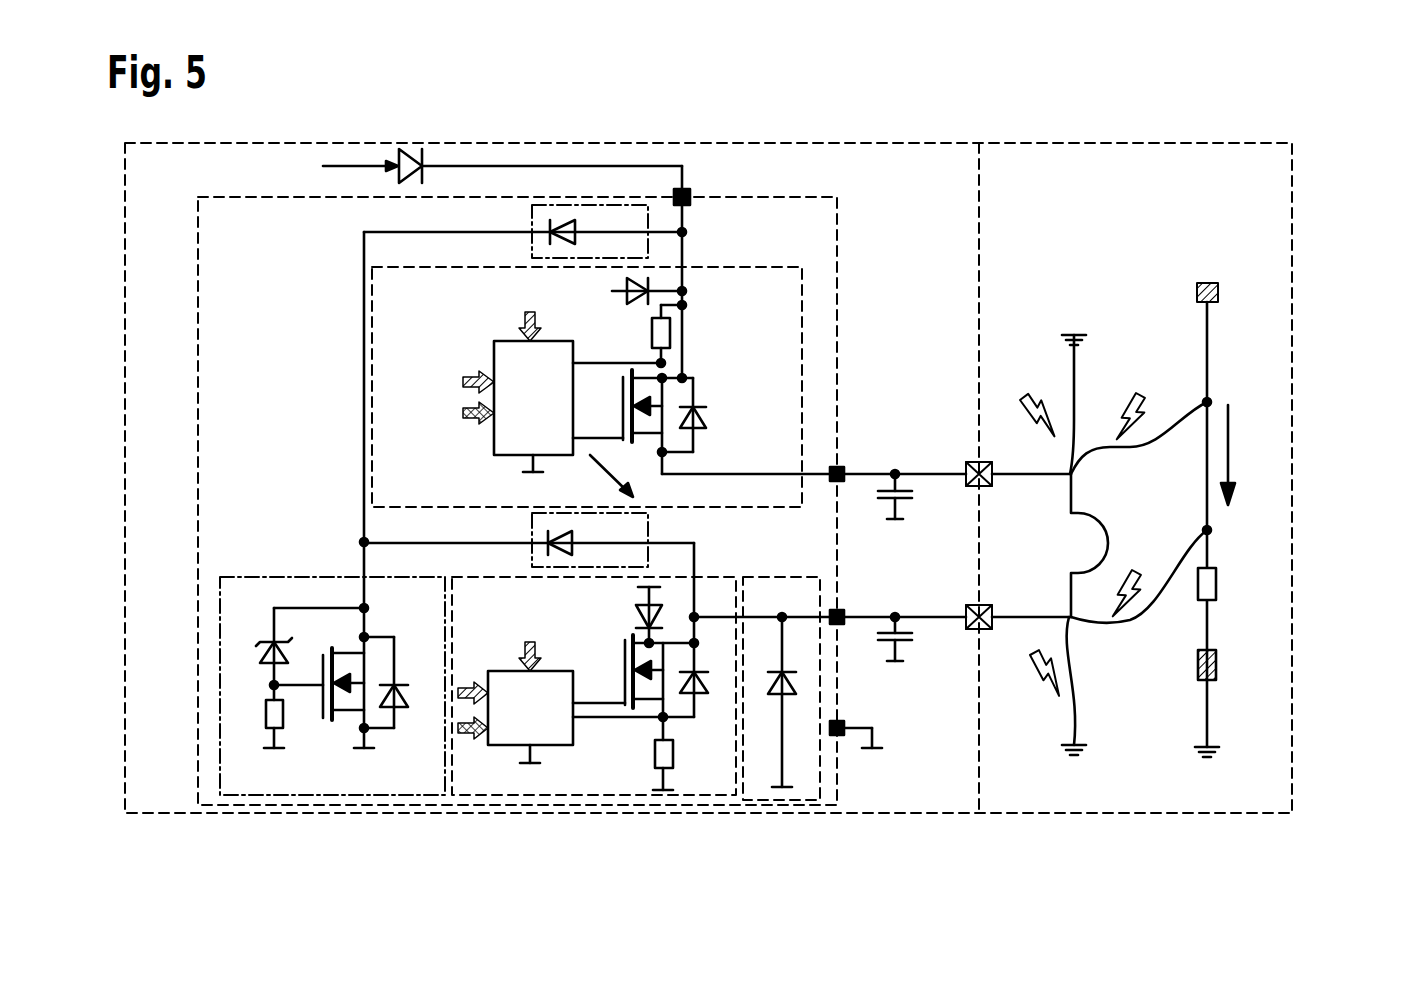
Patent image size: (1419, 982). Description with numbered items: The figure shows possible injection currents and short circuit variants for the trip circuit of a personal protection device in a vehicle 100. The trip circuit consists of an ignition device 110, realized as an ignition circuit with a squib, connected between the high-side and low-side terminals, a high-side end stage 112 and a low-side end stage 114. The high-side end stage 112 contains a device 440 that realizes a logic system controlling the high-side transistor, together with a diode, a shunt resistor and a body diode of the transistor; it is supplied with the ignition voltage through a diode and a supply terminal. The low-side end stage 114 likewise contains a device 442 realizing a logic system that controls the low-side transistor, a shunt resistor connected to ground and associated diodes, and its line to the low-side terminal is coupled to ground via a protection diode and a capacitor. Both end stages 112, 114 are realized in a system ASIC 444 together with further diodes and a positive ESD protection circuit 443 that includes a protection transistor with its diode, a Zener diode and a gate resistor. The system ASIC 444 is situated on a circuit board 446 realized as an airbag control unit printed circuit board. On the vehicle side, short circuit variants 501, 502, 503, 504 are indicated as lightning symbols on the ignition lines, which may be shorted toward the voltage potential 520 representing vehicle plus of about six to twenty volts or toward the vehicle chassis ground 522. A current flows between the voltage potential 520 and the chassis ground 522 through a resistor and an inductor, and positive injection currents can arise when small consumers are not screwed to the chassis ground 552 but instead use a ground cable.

The vehicle 100 is at (1292, 190).
The ignition device 110 is at (1098, 543).
The high-side end stage 112 is at (745, 267).
The low-side end stage 114 is at (724, 577).
The device 440 is at (494, 350).
The device 442 is at (505, 671).
The positive IGH/IGL_ESD-P circuit 443 is at (276, 577).
The system ASIC 444 is at (837, 247).
The circuit board 446 is at (979, 192).
The short circuit variant 501 is at (1128, 393).
The short circuit variant 502 is at (1122, 567).
The short circuit variant 503 is at (1013, 398).
The short circuit variant 504 is at (1030, 700).
The voltage potential 520 is at (1207, 283).
The vehicle chassis ground 522 is at (1077, 333).
The chassis GND 552 is at (1210, 760).